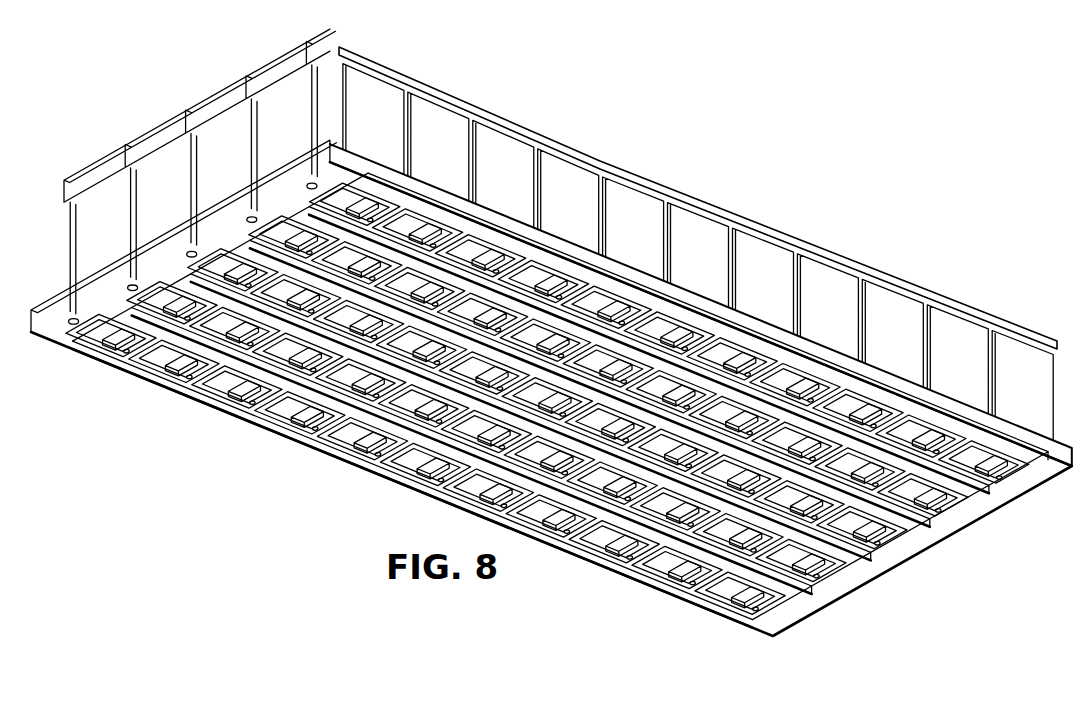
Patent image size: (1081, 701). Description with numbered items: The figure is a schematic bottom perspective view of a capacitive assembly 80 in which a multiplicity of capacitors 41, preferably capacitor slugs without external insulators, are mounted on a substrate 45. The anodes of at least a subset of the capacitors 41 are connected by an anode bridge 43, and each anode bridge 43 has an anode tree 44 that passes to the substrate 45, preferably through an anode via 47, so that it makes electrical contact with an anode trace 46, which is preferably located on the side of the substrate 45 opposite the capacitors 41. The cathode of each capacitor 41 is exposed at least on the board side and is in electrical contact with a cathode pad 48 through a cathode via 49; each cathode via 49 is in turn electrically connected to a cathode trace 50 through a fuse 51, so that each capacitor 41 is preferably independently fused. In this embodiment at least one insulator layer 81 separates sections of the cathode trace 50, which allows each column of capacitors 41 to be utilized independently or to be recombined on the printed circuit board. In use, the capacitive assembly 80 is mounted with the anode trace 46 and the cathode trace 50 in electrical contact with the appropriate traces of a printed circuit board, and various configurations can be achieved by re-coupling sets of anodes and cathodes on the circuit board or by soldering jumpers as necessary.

The capacitor 41 is at (390, 102).
The anode bridge 43 is at (126, 166).
The anode tree 44 is at (69, 236).
The substrate 45 is at (706, 302).
The anode trace 46 is at (52, 326).
The anode via 47 is at (66, 326).
The cathode pad 48 is at (400, 222).
The cathode via 49 is at (479, 247).
The cathode trace 50 is at (758, 350).
The fuse 51 is at (432, 230).
The capacitive assembly 80 is at (648, 612).
The insulator layer 81 is at (832, 590).